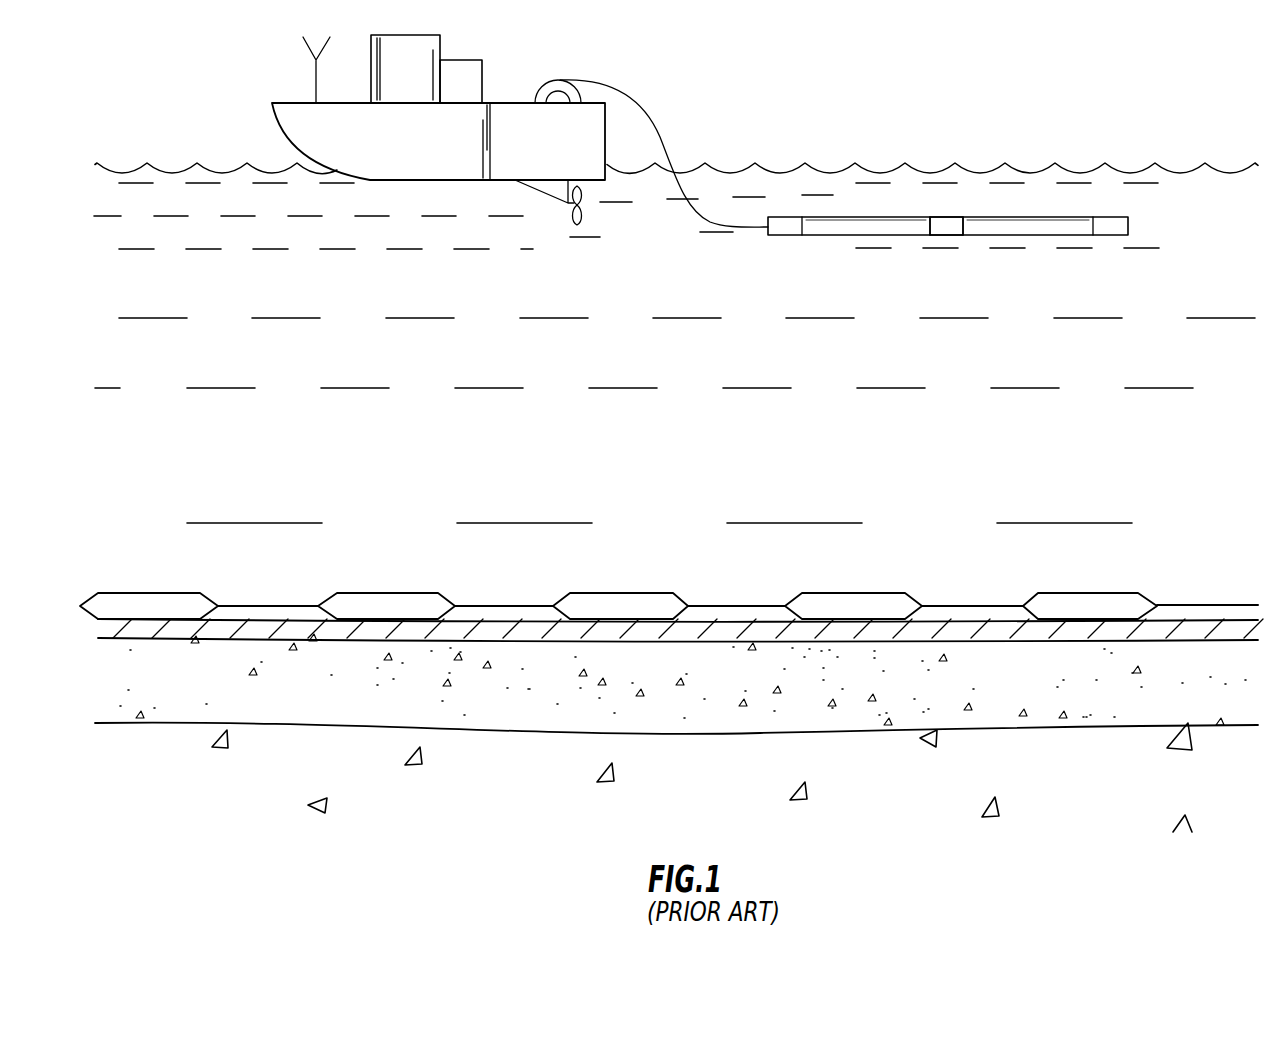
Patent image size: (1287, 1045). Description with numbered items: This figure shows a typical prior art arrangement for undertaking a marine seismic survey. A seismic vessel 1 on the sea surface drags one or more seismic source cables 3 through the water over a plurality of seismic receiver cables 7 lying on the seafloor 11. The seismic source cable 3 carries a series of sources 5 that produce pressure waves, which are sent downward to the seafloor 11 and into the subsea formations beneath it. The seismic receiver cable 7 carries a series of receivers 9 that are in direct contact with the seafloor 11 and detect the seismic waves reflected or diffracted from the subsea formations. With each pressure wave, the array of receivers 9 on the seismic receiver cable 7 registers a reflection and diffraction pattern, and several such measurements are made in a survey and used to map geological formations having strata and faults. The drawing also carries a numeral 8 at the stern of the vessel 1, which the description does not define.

The seismic vessel 1 is at (337, 135).
The seismic source cable 3 is at (823, 217).
The source 5 is at (948, 230).
The seismic receiver cable 7 is at (238, 606).
The vessel stern / tow point 8 is at (592, 172).
The receiver 9 is at (417, 605).
The seafloor 11 is at (505, 670).